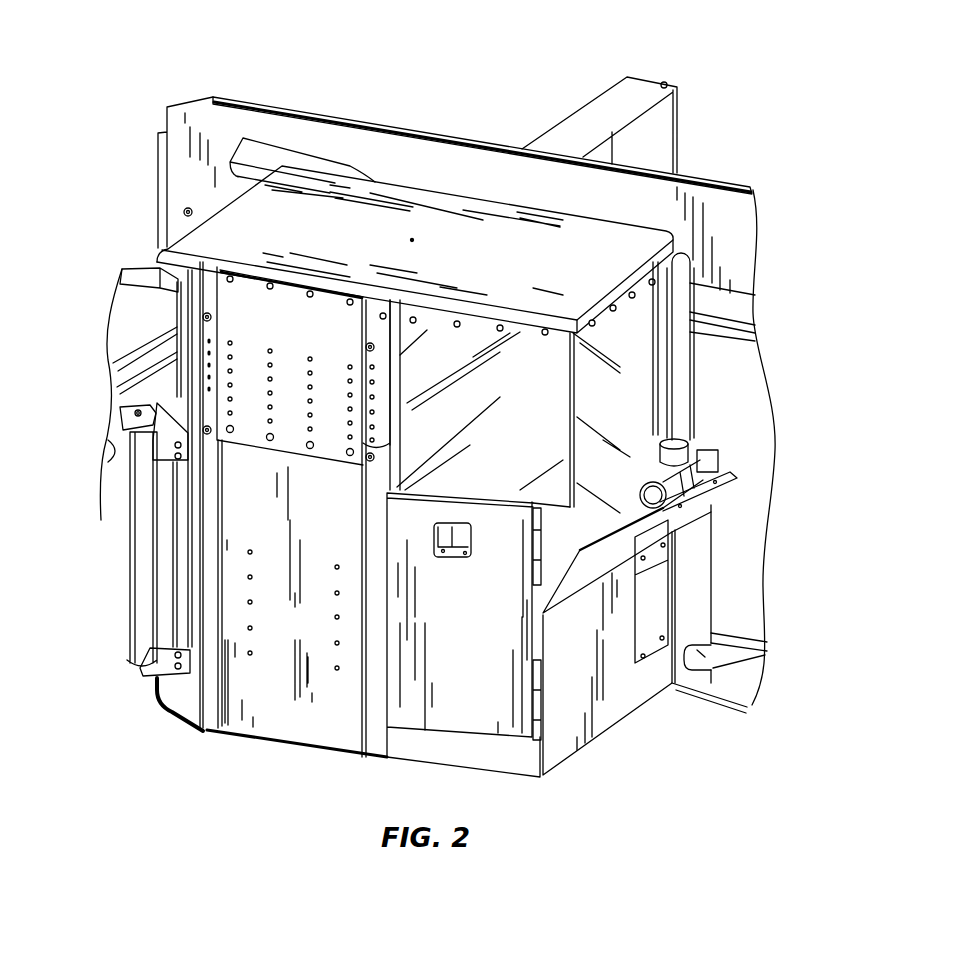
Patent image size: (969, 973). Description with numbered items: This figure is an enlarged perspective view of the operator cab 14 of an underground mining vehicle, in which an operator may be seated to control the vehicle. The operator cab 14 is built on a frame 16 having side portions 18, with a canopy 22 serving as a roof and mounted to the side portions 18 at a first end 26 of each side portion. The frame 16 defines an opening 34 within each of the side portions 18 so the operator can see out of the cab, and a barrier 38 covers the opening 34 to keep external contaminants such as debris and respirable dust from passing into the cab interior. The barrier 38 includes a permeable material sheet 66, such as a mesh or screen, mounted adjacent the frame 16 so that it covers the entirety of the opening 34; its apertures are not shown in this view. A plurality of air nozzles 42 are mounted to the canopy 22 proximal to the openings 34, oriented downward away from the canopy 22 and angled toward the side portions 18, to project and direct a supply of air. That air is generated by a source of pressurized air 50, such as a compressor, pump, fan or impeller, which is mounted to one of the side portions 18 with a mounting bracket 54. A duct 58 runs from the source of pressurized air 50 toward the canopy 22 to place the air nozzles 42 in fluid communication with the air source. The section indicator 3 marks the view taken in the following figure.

The operator cab 14 is at (125, 793).
The frame 16 is at (318, 698).
The side portions 18 is at (405, 680).
The canopy 22 is at (295, 192).
The first end 26 is at (178, 292).
The opening 34 is at (635, 381).
The barrier 38 is at (773, 312).
The air nozzles 42 is at (545, 329).
The source of pressurized air 50 is at (720, 473).
The mounting bracket 54 is at (710, 500).
The duct 58 is at (683, 353).
The permeable material sheet 66 is at (538, 430).
The section line of FIG. 3 is at (642, 250).